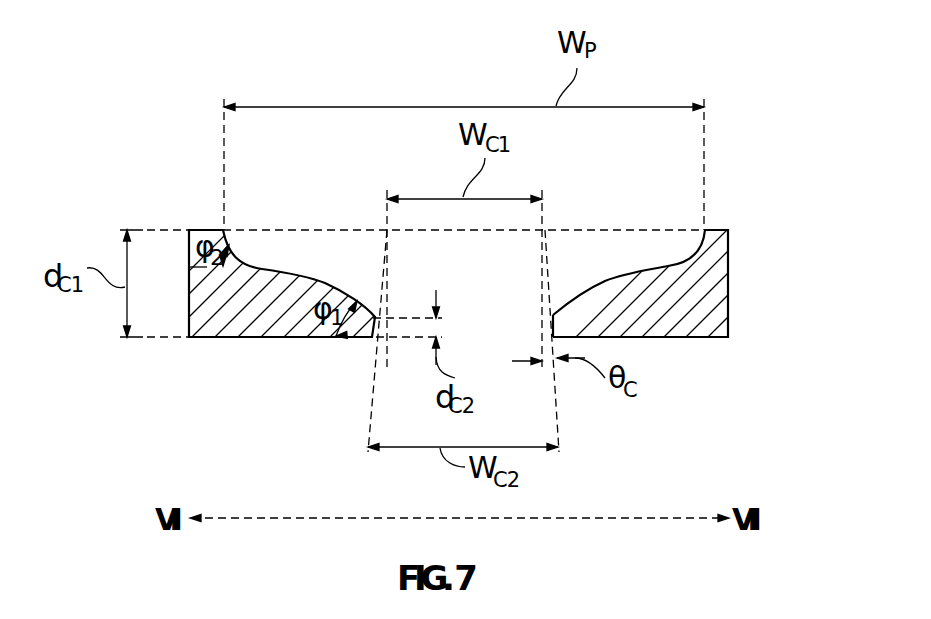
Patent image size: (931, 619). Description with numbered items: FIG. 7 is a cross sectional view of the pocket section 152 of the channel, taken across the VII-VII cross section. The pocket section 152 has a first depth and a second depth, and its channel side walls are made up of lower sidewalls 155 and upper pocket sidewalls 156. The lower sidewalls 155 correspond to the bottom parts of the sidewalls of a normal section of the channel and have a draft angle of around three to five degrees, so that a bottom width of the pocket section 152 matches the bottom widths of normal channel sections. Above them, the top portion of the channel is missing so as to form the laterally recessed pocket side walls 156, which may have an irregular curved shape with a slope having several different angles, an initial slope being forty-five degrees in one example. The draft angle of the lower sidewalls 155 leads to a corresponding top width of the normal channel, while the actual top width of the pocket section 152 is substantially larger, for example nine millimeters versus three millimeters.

The pocket section 152 is at (480, 218).
The lower sidewalls 155 is at (565, 326).
The upper pocket sidewalls 156 is at (683, 283).